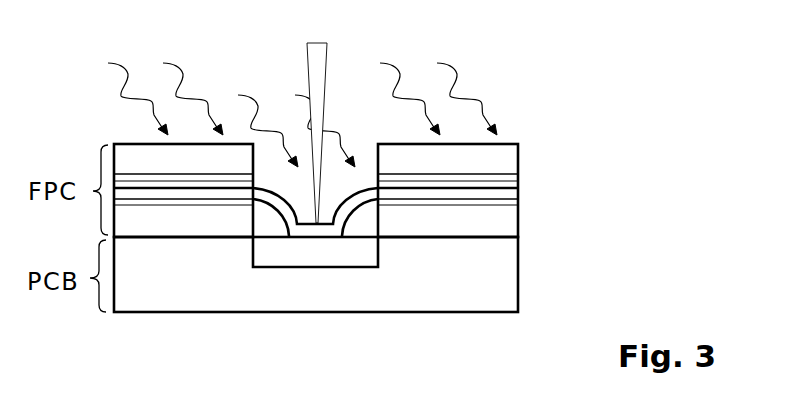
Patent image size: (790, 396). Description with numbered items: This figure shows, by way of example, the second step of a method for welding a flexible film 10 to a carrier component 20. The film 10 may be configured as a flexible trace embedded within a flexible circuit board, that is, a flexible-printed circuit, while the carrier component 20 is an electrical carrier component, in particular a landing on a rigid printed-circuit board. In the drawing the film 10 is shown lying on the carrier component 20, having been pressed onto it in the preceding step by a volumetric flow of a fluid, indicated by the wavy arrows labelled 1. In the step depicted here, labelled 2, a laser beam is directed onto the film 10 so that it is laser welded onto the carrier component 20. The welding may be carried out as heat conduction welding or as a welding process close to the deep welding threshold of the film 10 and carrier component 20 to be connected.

The light irradiation (step 1) 1 is at (289, 115).
The laser beam irradiation (step 2) 2 is at (308, 98).
The film 10 is at (329, 229).
The carrier component 20 is at (367, 254).